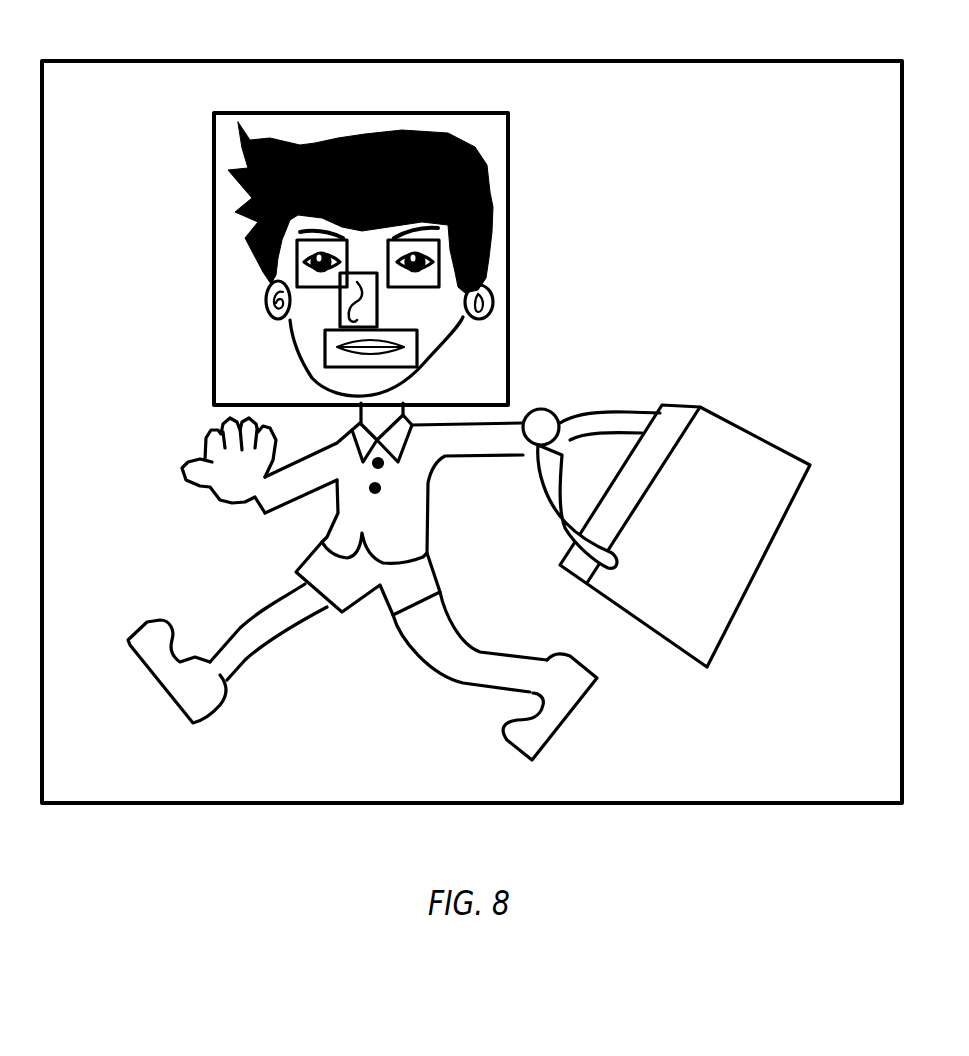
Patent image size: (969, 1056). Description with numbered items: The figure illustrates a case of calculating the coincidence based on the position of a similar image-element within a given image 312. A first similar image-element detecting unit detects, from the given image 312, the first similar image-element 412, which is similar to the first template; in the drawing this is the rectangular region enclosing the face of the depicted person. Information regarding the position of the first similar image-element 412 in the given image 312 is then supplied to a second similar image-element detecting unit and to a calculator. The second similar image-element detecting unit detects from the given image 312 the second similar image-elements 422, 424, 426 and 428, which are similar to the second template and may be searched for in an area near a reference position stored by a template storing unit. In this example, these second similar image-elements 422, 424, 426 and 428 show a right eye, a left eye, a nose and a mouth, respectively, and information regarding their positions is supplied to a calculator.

The given image 312 is at (477, 60).
The first similar image-element 412 is at (508, 152).
The second similar image-element 422 is at (322, 288).
The second similar image-element 424 is at (430, 290).
The second similar image-element 426 is at (378, 300).
The second similar image-element 428 is at (418, 348).